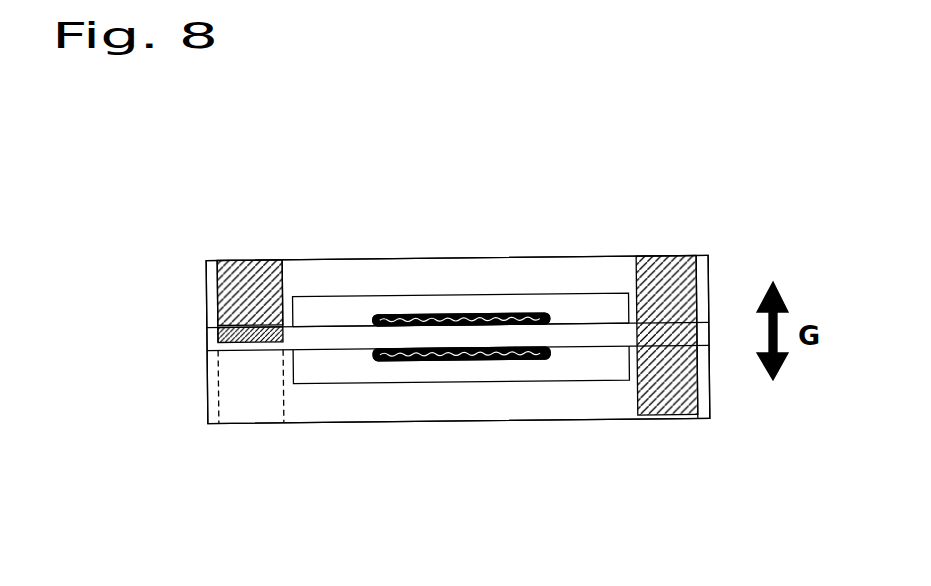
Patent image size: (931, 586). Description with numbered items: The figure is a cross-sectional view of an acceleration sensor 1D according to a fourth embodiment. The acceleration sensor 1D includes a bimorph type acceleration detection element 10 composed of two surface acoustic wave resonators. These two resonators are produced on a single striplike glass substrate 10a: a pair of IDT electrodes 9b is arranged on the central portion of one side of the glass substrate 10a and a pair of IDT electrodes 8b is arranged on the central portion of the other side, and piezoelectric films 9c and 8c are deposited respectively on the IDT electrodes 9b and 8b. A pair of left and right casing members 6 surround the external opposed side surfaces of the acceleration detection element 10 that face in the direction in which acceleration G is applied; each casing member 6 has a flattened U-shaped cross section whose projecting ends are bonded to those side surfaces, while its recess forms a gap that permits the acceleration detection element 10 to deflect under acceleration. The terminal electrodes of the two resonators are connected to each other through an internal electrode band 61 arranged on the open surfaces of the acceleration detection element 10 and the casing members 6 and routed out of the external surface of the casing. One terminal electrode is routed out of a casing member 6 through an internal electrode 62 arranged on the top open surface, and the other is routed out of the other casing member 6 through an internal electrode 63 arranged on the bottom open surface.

The acceleration sensor 1D is at (494, 222).
The casing member 6 is at (333, 259).
The internal electrode band 61 is at (666, 258).
The internal electrode 62 is at (246, 259).
The internal electrode 63 is at (219, 387).
The IDT electrodes 9b is at (407, 313).
The piezoelectric film 9c is at (463, 313).
The IDT electrodes 8b is at (413, 361).
The piezoelectric film 8c is at (477, 361).
The bimorph type acceleration detection element 10 is at (609, 308).
The glass substrate 10a is at (566, 331).